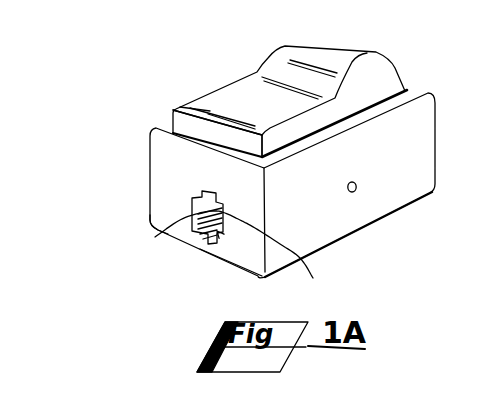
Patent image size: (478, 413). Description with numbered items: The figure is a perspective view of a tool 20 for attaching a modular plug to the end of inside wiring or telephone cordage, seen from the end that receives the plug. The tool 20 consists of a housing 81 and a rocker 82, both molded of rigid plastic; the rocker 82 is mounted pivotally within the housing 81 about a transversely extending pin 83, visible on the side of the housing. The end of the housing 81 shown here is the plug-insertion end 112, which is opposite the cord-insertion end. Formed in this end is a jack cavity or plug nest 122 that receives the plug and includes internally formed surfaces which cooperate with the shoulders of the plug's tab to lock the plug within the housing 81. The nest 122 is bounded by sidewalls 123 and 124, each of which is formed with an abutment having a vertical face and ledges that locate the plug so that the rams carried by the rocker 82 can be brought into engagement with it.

The tool 20 is at (235, 64).
The housing 81 is at (402, 192).
The rocker 82 is at (400, 60).
The pin 83 is at (355, 191).
The plug-insertion end 112 is at (238, 250).
The plug nest 122 is at (162, 238).
The sidewall 123 is at (183, 207).
The sidewall 124 is at (245, 254).